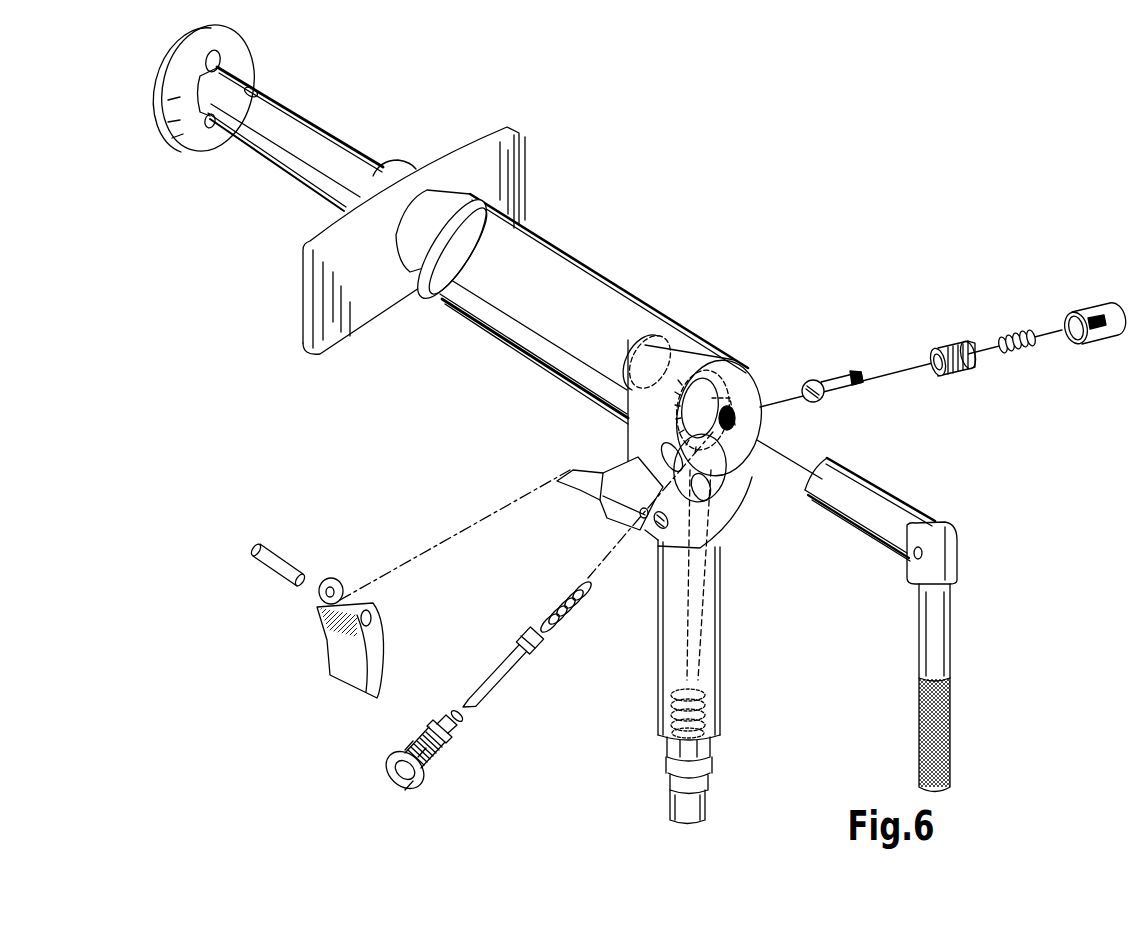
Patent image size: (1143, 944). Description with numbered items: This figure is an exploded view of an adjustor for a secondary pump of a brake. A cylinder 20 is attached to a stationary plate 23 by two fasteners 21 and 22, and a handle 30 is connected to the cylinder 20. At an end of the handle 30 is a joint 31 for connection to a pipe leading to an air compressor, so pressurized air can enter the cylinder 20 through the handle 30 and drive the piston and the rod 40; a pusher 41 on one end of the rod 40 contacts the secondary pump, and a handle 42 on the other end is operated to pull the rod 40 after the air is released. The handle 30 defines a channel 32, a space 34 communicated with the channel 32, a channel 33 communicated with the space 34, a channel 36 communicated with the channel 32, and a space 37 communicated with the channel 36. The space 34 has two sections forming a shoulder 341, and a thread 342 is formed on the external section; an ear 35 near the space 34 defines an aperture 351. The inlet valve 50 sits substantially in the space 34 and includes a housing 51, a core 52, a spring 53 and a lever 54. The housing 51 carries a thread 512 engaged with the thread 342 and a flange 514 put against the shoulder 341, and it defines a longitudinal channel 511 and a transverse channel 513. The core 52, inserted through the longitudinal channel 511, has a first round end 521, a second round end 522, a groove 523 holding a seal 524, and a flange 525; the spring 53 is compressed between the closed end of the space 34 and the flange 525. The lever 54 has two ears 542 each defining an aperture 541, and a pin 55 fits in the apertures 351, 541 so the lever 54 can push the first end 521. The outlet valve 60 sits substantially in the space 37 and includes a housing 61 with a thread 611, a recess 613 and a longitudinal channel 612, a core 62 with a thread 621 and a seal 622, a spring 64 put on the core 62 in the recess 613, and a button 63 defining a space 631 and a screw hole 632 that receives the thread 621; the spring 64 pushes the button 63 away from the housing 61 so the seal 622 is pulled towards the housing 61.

The cylinder 20 is at (467, 323).
The fastener 21 is at (472, 193).
The fastener 22 is at (393, 160).
The stationary plate 23 is at (505, 122).
The handle 30 is at (680, 459).
The joint 31 is at (690, 806).
The channel 32 is at (677, 447).
The channel 33 is at (692, 650).
The space 34 is at (728, 527).
The shoulder 341 is at (703, 492).
The thread 342 is at (665, 462).
The ear 35 is at (597, 482).
The aperture 351 is at (605, 478).
The channel 36 is at (715, 380).
The space 37 is at (748, 368).
The rod 40 is at (912, 625).
The pusher 41 is at (243, 55).
The handle 42 is at (940, 640).
The inlet valve 50 is at (451, 635).
The housing 51 is at (423, 777).
The longitudinal channel 511 is at (413, 782).
The thread 512 is at (425, 765).
The transverse channel 513 is at (437, 752).
The flange 514 is at (448, 735).
The core 52 is at (510, 676).
The first round end 521 is at (470, 706).
The second round end 522 is at (540, 643).
The groove 523 is at (492, 690).
The seal 524 is at (454, 709).
The flange 525 is at (530, 650).
The spring 53 is at (551, 606).
The lever 54 is at (314, 604).
The aperture 541 is at (348, 620).
The ear 542 is at (330, 580).
The pin 55 is at (270, 561).
The outlet valve 60 is at (949, 290).
The housing 61 is at (961, 357).
The thread 611 is at (954, 376).
The longitudinal channel 612 is at (932, 371).
The recess 613 is at (968, 367).
The core 62 is at (836, 376).
The thread 621 is at (858, 374).
The seal 622 is at (816, 383).
The button 63 is at (1087, 320).
The space 631 is at (1076, 333).
The screw hole 632 is at (1100, 325).
The spring 64 is at (1016, 330).